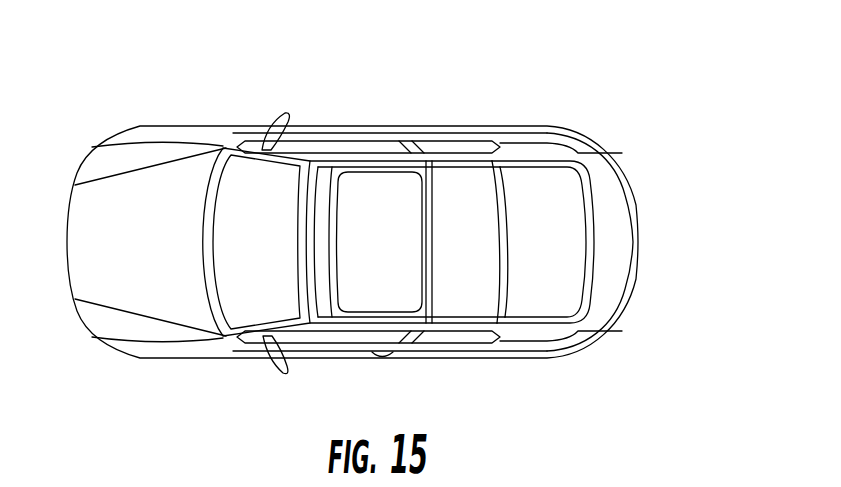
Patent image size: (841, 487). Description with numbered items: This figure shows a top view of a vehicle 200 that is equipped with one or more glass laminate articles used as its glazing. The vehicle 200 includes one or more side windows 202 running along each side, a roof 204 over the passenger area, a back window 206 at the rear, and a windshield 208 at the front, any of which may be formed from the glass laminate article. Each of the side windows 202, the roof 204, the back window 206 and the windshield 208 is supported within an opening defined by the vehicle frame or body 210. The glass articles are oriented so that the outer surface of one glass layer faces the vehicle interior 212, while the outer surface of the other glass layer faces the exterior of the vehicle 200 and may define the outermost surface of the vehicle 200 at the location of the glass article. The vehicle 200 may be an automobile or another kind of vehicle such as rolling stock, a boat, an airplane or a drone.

The vehicle 200 is at (696, 112).
The side windows 202 is at (425, 143).
The roof 204 is at (380, 230).
The back window 206 is at (563, 233).
The windshield 208 is at (250, 278).
The vehicle frame or body 210 is at (330, 307).
The vehicle interior 212 is at (472, 280).